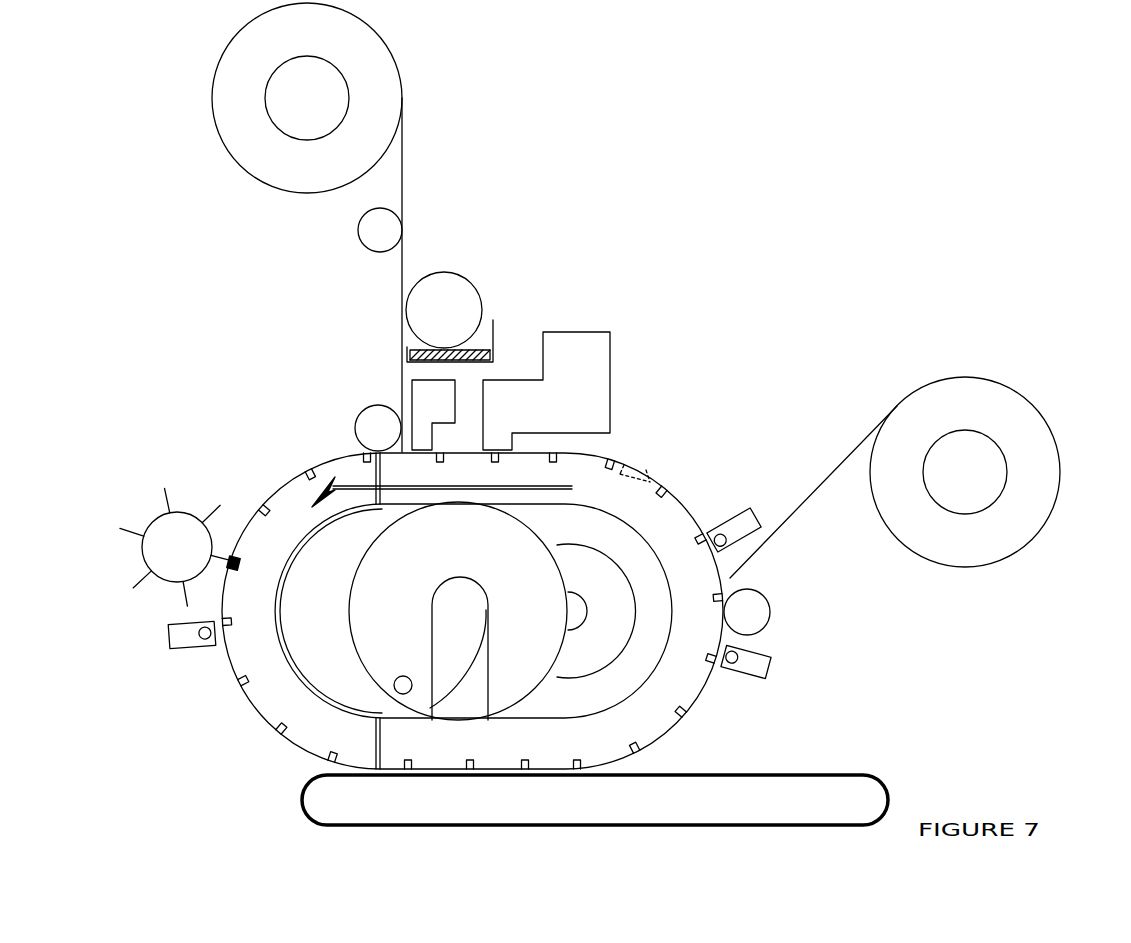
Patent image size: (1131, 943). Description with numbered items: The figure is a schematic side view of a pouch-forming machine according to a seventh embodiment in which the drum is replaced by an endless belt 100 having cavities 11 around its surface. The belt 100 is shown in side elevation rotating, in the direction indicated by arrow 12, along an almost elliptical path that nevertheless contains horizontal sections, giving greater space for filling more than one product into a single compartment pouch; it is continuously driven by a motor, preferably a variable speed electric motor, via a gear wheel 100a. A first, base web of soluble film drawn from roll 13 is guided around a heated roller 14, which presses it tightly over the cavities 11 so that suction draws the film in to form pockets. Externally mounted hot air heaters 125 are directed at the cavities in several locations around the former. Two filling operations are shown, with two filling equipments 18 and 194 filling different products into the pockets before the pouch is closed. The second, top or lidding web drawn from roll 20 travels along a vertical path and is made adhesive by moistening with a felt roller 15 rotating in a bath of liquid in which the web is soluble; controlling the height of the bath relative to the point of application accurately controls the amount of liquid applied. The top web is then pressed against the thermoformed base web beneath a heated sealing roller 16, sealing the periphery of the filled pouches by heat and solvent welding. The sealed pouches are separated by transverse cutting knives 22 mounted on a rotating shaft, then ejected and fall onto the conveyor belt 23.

The cavities 11 is at (640, 478).
The arrow 12 is at (352, 480).
The roll 13 is at (1040, 413).
The heated roller 14 is at (762, 600).
The felt roller 15 is at (478, 293).
The heated sealing roller 16 is at (360, 413).
The filling hopper or injector 18 is at (610, 360).
The roll 20 is at (258, 180).
The transverse cutting knives 22 is at (142, 528).
The conveyor belt 23 is at (302, 805).
The endless belt 100 is at (673, 683).
The gear wheel 100a is at (300, 653).
The hot air heaters 125 is at (170, 643).
The filling equipment 194 is at (412, 392).